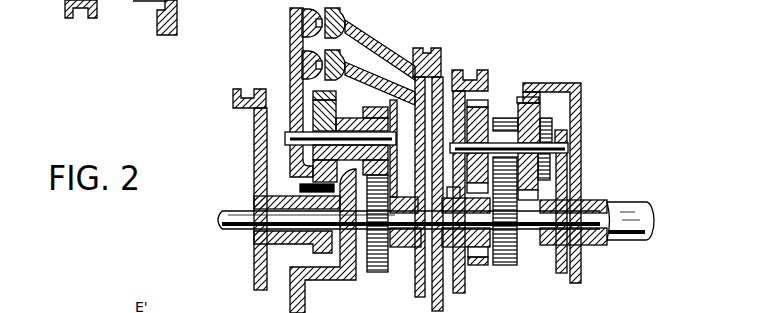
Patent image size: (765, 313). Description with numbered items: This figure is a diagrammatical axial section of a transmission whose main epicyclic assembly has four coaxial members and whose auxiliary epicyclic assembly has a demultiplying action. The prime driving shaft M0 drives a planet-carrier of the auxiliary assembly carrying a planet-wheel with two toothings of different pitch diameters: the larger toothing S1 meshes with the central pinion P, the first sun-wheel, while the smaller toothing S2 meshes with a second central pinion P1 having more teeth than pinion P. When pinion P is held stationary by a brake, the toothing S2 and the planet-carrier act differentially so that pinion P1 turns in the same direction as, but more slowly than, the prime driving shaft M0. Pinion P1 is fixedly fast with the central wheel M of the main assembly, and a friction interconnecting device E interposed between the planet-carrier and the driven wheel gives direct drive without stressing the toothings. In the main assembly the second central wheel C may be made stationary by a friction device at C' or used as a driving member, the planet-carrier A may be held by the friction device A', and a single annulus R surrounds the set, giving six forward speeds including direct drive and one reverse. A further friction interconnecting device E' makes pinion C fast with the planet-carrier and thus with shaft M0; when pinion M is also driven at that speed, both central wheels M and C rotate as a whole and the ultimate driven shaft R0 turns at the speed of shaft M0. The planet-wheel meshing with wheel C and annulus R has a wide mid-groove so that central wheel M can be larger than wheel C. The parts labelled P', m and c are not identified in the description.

The friction interconnecting device E' is at (297, 90).
The friction interconnecting device E is at (301, 62).
The planet carrier plate P' is at (244, 174).
The larger toothing of planet-wheel S1 is at (334, 99).
The smaller toothing of planet-wheel S2 is at (386, 118).
The friction device C' is at (428, 163).
The planet-carrier A is at (469, 166).
The friction device A' is at (483, 91).
The annulus R is at (536, 83).
The small pinion m is at (503, 118).
The small gear c is at (537, 114).
The prime driving shaft M0 is at (222, 210).
The ultimate driven shaft R0 is at (637, 202).
The central pinion P is at (323, 241).
The second central pinion P1 is at (376, 272).
The second central wheel C is at (477, 228).
The central wheel M is at (510, 265).